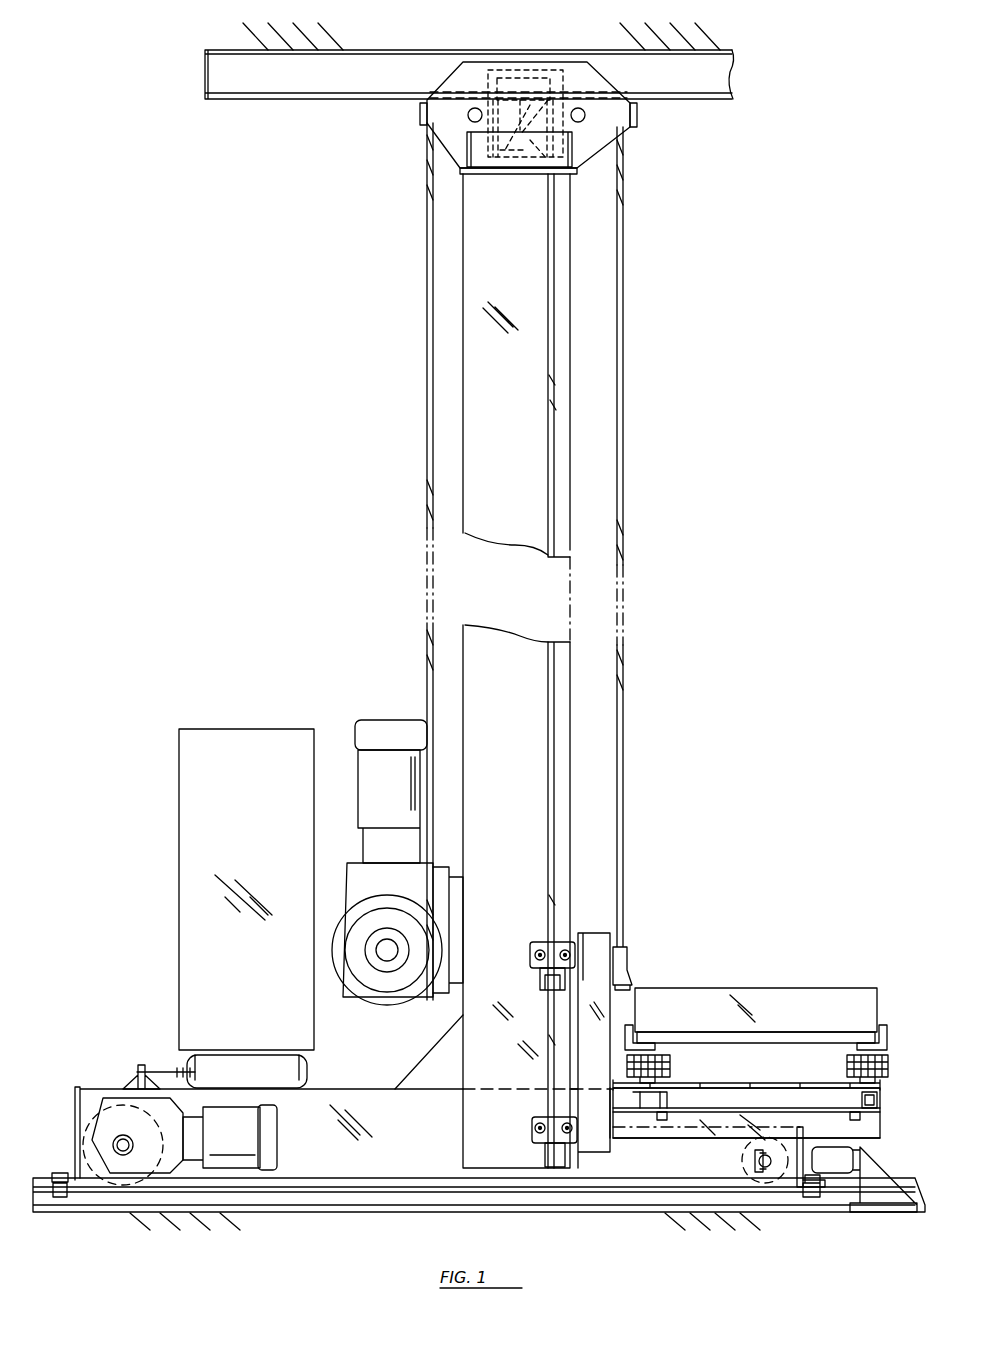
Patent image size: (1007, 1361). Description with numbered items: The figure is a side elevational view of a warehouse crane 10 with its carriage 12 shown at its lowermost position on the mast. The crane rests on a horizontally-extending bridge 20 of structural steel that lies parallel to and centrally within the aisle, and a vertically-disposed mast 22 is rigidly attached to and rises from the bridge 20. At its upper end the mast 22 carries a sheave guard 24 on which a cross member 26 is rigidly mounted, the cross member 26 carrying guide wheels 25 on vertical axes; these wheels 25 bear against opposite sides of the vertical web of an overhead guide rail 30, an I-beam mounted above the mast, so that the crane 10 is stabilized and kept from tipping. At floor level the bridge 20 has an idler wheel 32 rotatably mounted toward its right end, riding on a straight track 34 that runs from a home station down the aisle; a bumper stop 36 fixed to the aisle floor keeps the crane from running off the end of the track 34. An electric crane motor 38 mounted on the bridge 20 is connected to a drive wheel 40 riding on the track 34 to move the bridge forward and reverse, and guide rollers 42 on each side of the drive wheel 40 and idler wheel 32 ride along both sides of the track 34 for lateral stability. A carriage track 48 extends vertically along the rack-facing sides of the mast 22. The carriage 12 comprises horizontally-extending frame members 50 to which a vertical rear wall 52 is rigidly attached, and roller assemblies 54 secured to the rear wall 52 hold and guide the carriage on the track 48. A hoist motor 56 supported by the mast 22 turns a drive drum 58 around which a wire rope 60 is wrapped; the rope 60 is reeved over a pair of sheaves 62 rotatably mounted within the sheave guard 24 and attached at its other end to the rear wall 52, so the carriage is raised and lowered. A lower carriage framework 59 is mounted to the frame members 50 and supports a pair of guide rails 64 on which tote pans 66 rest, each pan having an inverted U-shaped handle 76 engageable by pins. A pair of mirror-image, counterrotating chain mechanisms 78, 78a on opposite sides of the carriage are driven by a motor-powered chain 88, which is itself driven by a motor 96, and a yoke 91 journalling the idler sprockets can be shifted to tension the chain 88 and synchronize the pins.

The warehouse crane 10 is at (657, 347).
The carriage 12 is at (882, 1121).
The bridge 20 is at (402, 1149).
The mast 22 is at (520, 260).
The sheave guard 24 is at (634, 118).
The guide wheels 25 is at (530, 105).
The cross member 26 is at (548, 100).
The overhead guide rail 30 is at (355, 101).
The idler wheel 32 is at (762, 1182).
The track 34 is at (338, 1212).
The bumper stop 36 is at (833, 1173).
The crane motor 38 is at (242, 1142).
The drive wheel 40 is at (140, 1188).
The guide rollers 42 is at (62, 1197).
The carriage track 48 is at (548, 512).
The frame members 50 is at (878, 1134).
The rear wall 52 is at (592, 933).
The roller assemblies 54 is at (530, 962).
The hoist motor 56 is at (402, 786).
The drive drum 58 is at (376, 1000).
The lower carriage framework 59 is at (880, 1096).
The wire rope 60 is at (427, 623).
The sheaves 62 is at (443, 155).
The guide rails 64 is at (888, 1040).
The tote pans 66 is at (822, 988).
The handle 76 is at (805, 1033).
The chain mechanism 78 is at (845, 1065).
The chain mechanism 78a is at (672, 1065).
The motor-powered chain 88 is at (775, 1068).
The yoke 91 is at (672, 1093).
The motor 96 is at (600, 1085).